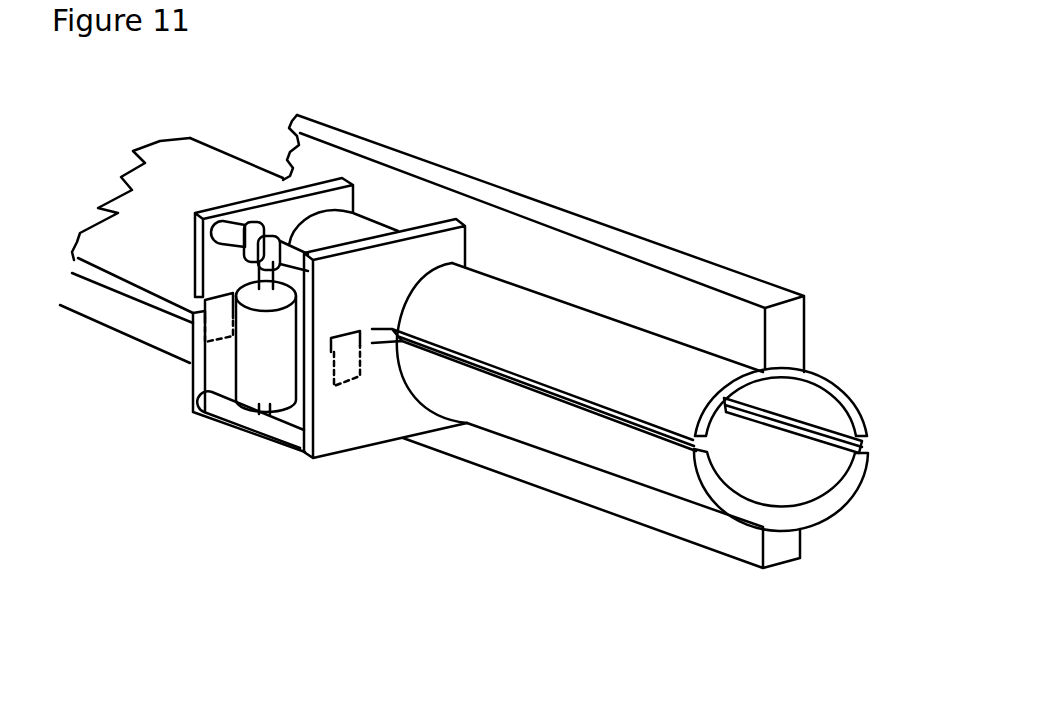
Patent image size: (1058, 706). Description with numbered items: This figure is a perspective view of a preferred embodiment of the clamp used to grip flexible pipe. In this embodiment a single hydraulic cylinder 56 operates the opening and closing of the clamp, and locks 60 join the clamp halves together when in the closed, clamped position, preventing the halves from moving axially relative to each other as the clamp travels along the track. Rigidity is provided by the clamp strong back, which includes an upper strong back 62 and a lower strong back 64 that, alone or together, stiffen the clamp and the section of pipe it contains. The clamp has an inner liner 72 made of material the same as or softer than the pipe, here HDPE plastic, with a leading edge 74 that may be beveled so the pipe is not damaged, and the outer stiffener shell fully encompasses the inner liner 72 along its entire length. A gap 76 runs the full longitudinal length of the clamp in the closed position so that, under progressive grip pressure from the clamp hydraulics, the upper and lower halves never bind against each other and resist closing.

The hydraulic cylinder 56 is at (262, 386).
The locks 60 is at (213, 310).
The upper strong back 62 is at (601, 266).
The lower strong back 64 is at (603, 495).
The inner liner 72 is at (636, 363).
The leading edge 74 is at (851, 399).
The gap 76 is at (548, 391).